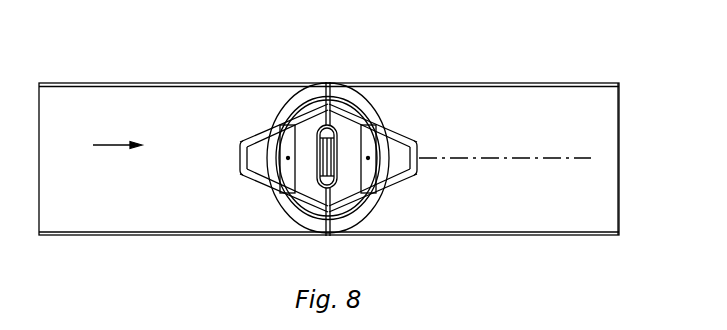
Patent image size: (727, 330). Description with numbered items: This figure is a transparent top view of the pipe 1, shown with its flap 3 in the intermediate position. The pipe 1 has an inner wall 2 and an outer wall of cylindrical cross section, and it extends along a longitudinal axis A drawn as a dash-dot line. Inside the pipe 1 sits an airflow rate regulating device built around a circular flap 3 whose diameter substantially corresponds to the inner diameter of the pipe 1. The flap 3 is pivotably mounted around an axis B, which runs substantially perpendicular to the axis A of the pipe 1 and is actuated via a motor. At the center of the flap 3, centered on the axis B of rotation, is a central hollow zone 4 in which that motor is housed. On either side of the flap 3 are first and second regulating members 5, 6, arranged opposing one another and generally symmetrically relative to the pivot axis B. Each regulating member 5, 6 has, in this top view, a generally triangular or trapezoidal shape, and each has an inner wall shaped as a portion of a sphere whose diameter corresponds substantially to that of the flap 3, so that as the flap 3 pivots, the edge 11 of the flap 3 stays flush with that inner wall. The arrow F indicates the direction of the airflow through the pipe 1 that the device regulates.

The pipe 1 is at (329, 137).
The inner wall 2 is at (503, 105).
The circular flap 3 is at (367, 208).
The central hollow zone 4 is at (317, 128).
The first regulating member 5 is at (265, 183).
The second regulating member 6 is at (390, 137).
The edge of the flap 11 is at (292, 218).
The axis of the pipe A is at (512, 159).
The axis of rotation of the flap B is at (323, 86).
The force direction F is at (117, 137).